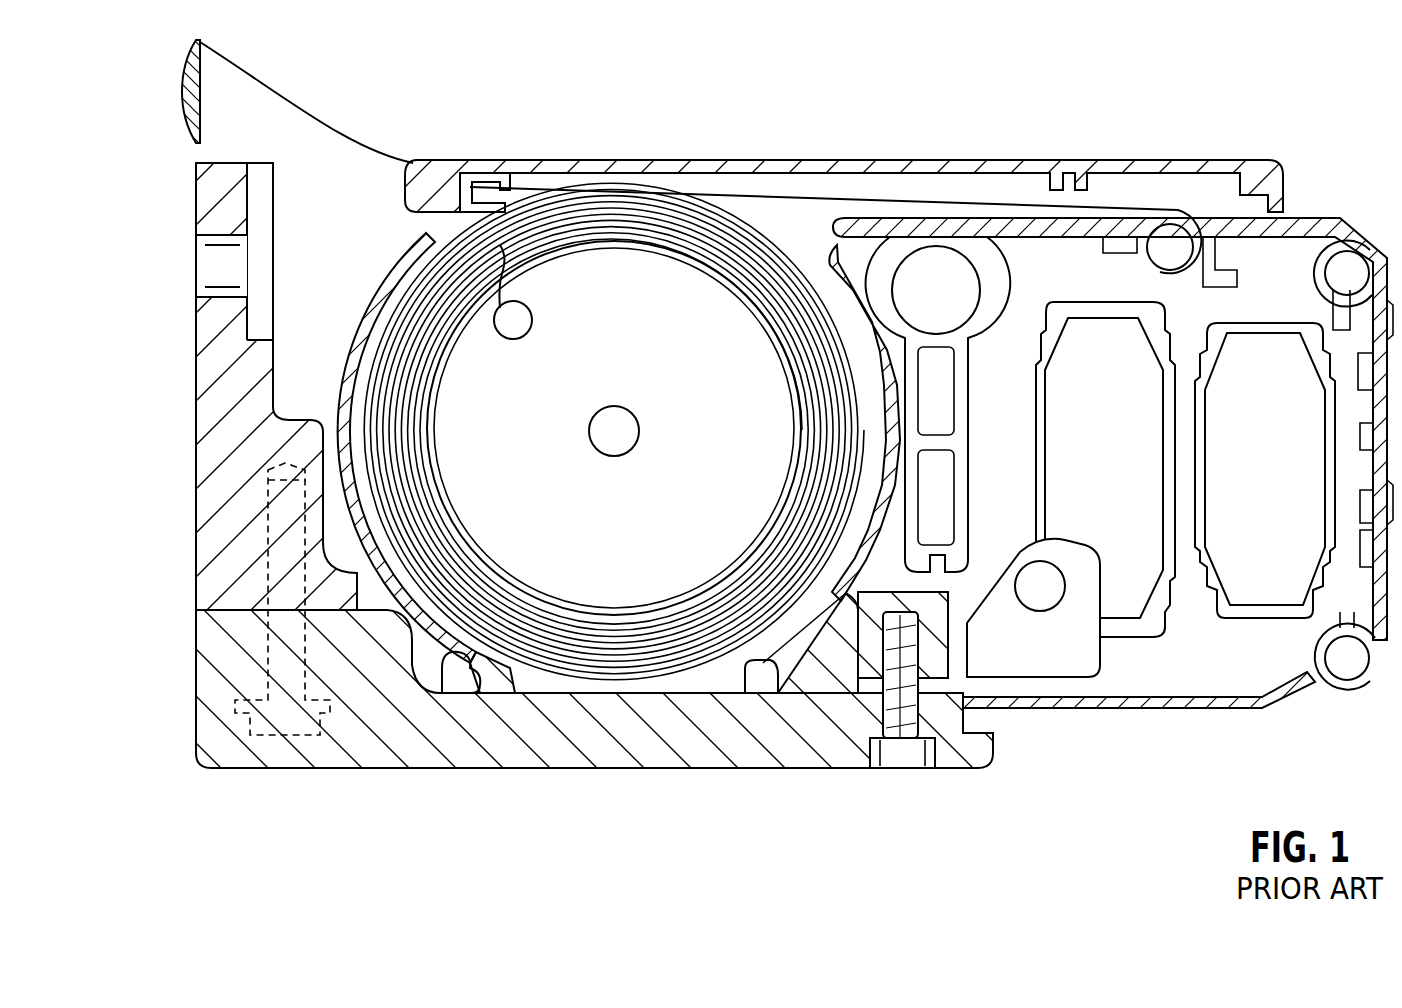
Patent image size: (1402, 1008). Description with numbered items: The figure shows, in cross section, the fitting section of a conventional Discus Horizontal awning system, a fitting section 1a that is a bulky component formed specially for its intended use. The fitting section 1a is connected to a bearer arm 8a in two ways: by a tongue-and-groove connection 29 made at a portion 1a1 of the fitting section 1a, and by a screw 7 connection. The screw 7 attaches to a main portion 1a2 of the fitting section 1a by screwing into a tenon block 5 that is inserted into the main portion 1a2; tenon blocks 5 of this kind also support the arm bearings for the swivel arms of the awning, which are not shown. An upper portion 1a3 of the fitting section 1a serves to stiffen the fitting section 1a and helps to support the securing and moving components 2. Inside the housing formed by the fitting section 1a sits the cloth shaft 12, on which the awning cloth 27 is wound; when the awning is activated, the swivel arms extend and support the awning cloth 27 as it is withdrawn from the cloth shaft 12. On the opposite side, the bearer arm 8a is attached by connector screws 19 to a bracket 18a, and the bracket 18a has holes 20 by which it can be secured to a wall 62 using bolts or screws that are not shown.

The fitting section 1a is at (1045, 548).
The portion of the fitting section 1a1 is at (520, 690).
The main portion of the fitting section 1a2 is at (858, 640).
The upper portion of the fitting section 1a3 is at (850, 255).
The securing and moving components 2 is at (1128, 667).
The tenon block 5 is at (930, 645).
The screw 7 is at (920, 715).
The bearer arm 8a is at (730, 745).
The cloth shaft 12 is at (675, 368).
The bracket 18a is at (218, 510).
The connector screws 19 is at (262, 725).
The holes 20 is at (215, 262).
The awning cloth 27 is at (782, 192).
The tongue-and-groove connection 29 is at (438, 690).
The wall 62 is at (192, 93).